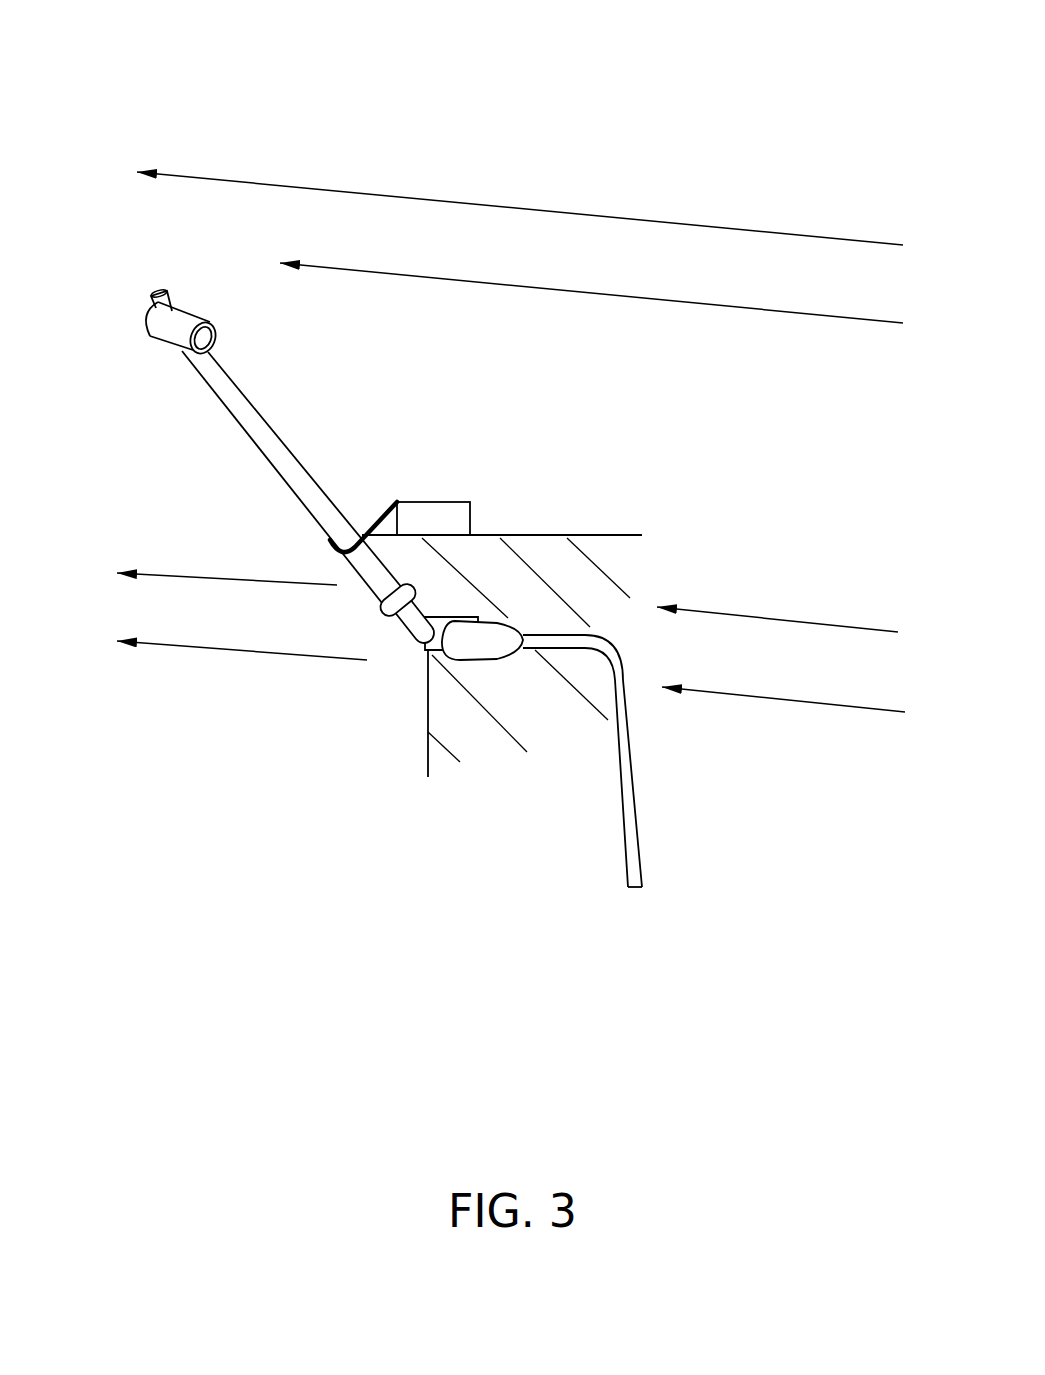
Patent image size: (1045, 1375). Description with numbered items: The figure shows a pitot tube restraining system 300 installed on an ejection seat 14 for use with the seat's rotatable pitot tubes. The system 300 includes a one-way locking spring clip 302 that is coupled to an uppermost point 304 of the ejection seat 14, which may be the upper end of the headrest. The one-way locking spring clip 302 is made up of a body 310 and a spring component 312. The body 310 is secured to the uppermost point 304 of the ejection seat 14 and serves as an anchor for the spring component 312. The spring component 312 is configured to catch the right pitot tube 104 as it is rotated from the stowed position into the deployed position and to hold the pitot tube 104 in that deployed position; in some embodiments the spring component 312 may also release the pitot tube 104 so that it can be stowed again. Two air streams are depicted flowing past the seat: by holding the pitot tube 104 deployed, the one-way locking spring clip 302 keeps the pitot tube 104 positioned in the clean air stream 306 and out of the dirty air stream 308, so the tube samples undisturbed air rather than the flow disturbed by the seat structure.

The pitot tube restraining system 300 is at (87, 105).
The clean air stream 306 is at (863, 230).
The dirty air stream 308 is at (853, 618).
The ejection seat 14 is at (653, 505).
The uppermost point 304 is at (527, 536).
The one-way locking spring clip 302 is at (460, 487).
The body 310 is at (417, 500).
The spring component 312 is at (378, 518).
The right pitot tube 104 is at (242, 423).